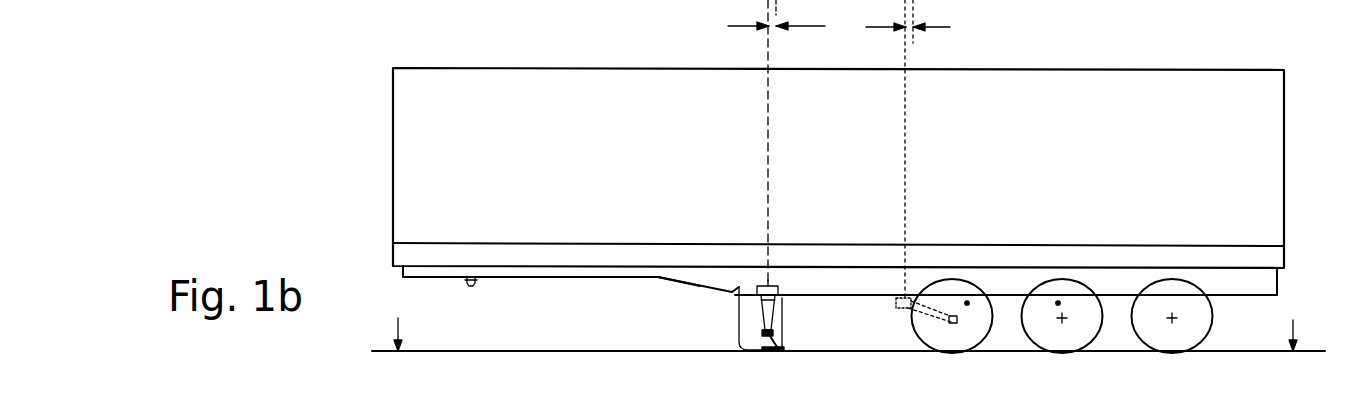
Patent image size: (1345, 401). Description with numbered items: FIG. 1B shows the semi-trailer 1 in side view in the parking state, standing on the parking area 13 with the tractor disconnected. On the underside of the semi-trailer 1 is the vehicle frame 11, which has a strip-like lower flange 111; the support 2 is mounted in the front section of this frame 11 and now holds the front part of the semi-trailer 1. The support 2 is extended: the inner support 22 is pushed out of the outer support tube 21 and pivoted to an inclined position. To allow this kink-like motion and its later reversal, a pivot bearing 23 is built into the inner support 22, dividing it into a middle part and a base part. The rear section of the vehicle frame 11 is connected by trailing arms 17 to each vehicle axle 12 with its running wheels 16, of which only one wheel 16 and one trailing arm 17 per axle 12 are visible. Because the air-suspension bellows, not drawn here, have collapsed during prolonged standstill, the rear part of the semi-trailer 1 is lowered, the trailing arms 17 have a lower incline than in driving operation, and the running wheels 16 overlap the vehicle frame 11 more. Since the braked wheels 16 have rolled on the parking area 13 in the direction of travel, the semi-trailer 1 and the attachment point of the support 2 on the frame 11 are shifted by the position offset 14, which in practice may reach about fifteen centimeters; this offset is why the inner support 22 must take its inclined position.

The semi-trailer 1 is at (576, 173).
The vehicle frame 11 is at (810, 283).
The lower flange 111 is at (658, 277).
The vehicle axle 12 is at (954, 317).
The parking area 13 is at (865, 333).
The position offset 14 is at (839, 148).
The running wheel 16 is at (967, 303).
The trailing arm 17 is at (927, 311).
The support 2 is at (737, 323).
The outer support tube 21 is at (772, 318).
The inner support 22 is at (783, 347).
The pivot bearing 23 is at (775, 332).